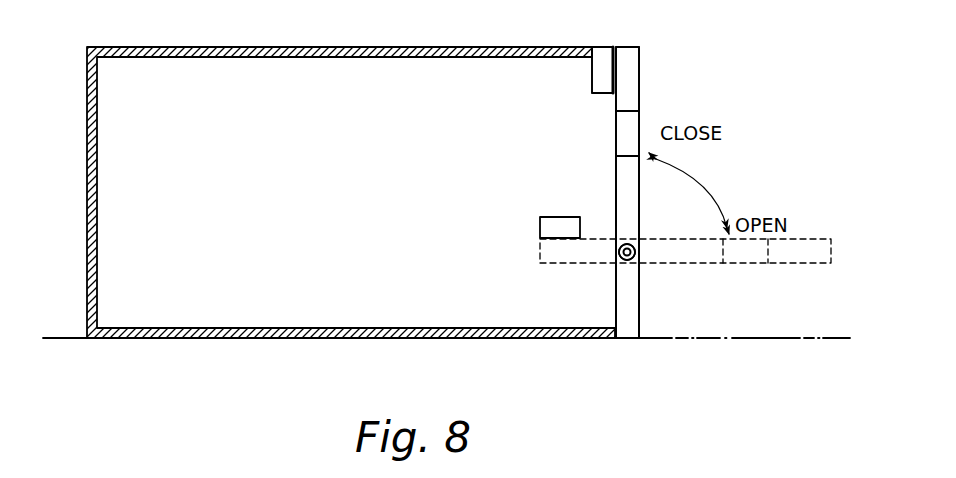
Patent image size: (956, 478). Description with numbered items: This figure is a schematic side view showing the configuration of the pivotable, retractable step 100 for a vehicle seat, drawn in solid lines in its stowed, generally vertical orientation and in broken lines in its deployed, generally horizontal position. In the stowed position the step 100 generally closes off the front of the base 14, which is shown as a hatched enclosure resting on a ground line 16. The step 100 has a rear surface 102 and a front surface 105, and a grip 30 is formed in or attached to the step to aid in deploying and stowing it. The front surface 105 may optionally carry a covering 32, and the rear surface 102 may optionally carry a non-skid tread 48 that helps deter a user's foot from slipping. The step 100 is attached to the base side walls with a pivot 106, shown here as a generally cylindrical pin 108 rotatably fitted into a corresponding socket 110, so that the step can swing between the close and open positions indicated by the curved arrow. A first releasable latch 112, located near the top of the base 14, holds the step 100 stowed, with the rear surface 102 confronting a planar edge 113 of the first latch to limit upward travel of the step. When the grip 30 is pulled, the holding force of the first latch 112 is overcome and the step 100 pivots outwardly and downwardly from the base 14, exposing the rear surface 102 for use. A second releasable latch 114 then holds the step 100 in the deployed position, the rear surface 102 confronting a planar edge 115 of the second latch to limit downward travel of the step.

The base 14 is at (447, 47).
The ground surface 16 is at (733, 342).
The grip 30 is at (616, 137).
The covering 32 is at (640, 97).
The tread 48 is at (616, 177).
The retractable step 100 is at (650, 63).
The rear surface 102 is at (616, 205).
The front surface 105 is at (640, 320).
The pivot 106 is at (612, 264).
The pin 108 is at (631, 260).
The socket 110 is at (633, 246).
The first releasable latch 112 is at (603, 78).
The planar edge 113 is at (608, 65).
The second releasable latch 114 is at (553, 228).
The planar edge 115 is at (557, 238).